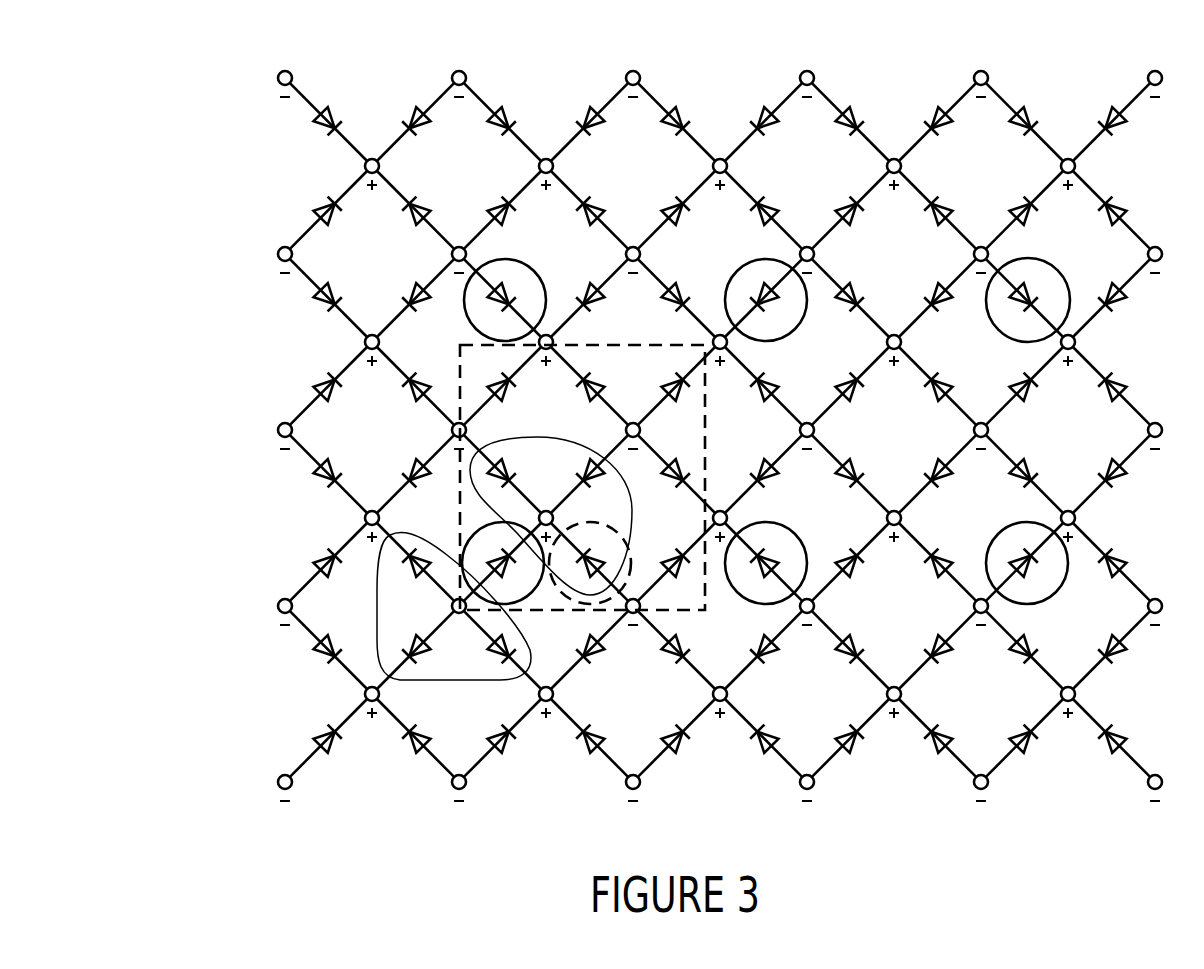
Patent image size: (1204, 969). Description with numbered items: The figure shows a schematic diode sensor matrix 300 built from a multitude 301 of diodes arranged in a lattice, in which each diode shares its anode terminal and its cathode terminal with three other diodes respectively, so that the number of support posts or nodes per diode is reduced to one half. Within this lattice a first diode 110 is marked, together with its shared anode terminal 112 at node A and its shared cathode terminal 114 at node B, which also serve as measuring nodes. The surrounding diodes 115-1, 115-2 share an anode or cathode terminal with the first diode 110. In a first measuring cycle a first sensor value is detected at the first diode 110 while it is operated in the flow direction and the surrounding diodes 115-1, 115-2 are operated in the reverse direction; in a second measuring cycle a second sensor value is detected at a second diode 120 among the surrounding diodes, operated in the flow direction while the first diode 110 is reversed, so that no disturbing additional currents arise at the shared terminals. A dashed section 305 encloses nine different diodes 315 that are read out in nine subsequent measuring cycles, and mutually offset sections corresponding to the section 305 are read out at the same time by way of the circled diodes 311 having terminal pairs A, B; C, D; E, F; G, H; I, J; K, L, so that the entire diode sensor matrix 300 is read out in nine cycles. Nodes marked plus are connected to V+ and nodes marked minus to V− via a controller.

The diode sensor matrix 300 is at (192, 46).
The multitude of diodes 301 is at (976, 186).
The section 305 is at (705, 455).
The diodes 311 is at (1076, 268).
The nine different diodes 315 is at (493, 378).
The first diode 110 is at (462, 541).
The anode terminal 112 is at (450, 610).
The cathode terminal 114 is at (552, 500).
The surrounding diode 115-1 is at (468, 682).
The surrounding diode 115-2 is at (596, 451).
The second diode 120 is at (610, 600).